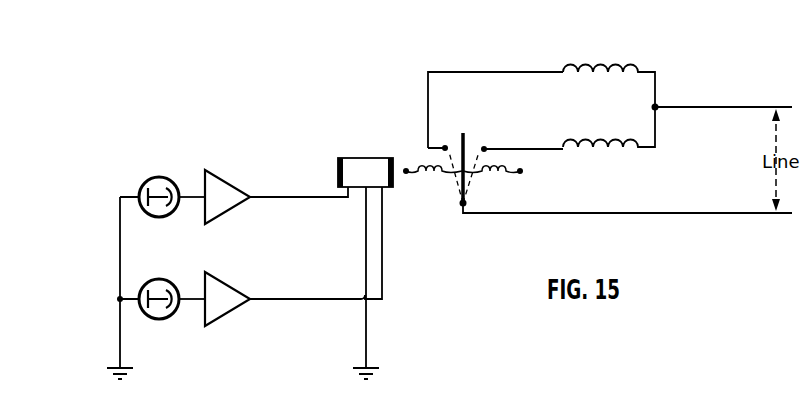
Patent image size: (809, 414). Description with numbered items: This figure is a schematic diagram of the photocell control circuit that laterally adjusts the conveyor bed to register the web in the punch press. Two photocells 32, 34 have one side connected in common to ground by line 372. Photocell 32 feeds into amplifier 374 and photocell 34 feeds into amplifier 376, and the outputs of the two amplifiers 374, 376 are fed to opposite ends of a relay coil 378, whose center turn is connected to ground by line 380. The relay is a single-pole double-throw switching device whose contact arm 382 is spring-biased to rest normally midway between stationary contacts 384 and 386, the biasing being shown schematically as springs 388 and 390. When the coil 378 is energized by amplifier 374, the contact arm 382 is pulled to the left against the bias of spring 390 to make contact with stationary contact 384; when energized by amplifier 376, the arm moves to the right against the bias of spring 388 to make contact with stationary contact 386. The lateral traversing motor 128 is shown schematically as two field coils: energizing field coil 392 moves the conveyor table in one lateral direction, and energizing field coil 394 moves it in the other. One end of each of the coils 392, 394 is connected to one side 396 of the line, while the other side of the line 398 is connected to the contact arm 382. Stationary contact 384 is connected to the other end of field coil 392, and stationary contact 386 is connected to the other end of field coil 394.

The photocell 32 is at (164, 176).
The photocell 34 is at (164, 278).
The lateral traversing motor 128 is at (662, 88).
The line 372 is at (120, 345).
The amplifier 374 is at (213, 174).
The amplifier 376 is at (213, 278).
The relay coil 378 is at (351, 159).
The line 380 is at (367, 336).
The contact arm 382 is at (460, 187).
The stationary contact 384 is at (443, 148).
The stationary contact 386 is at (484, 149).
The spring 388 is at (431, 176).
The spring 390 is at (499, 178).
The field coil 392 is at (617, 73).
The field coil 394 is at (613, 141).
The one side of the line 396 is at (672, 106).
The other side of the line 398 is at (667, 211).